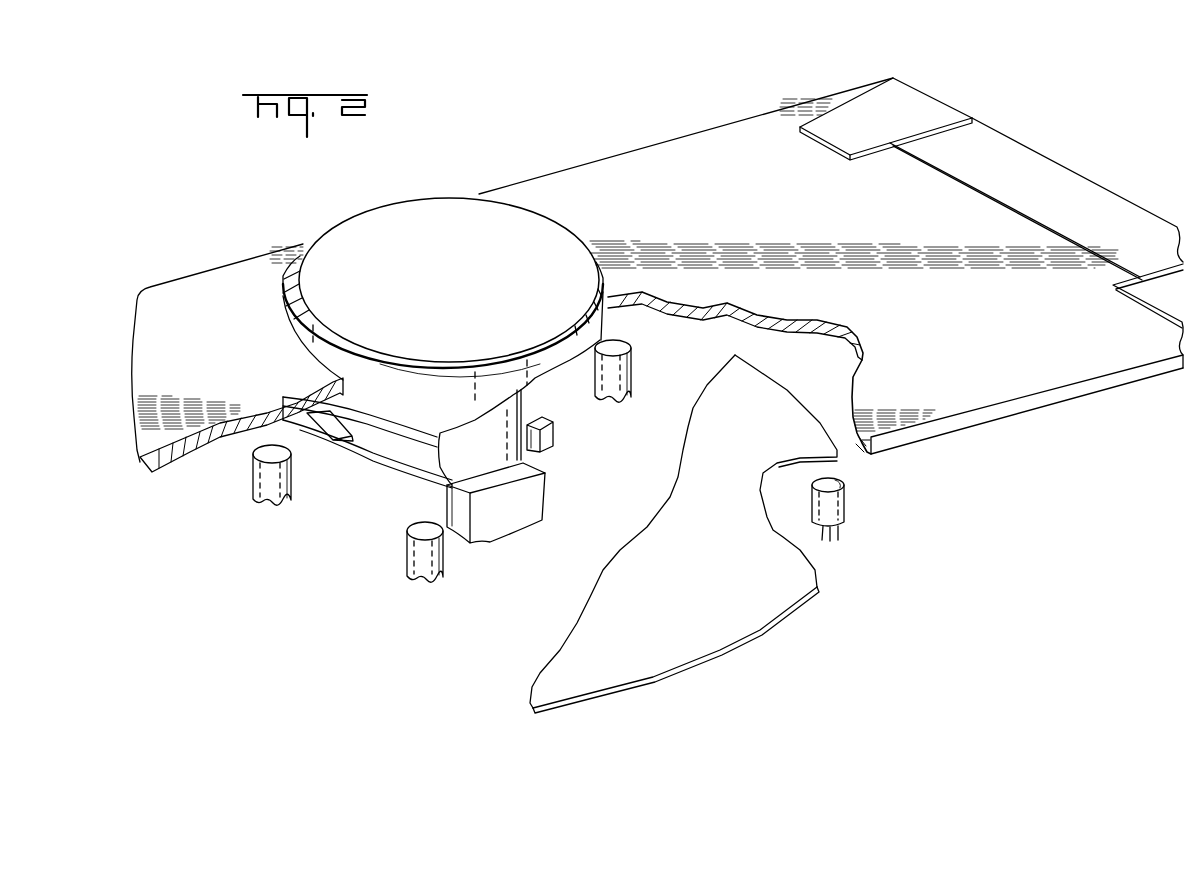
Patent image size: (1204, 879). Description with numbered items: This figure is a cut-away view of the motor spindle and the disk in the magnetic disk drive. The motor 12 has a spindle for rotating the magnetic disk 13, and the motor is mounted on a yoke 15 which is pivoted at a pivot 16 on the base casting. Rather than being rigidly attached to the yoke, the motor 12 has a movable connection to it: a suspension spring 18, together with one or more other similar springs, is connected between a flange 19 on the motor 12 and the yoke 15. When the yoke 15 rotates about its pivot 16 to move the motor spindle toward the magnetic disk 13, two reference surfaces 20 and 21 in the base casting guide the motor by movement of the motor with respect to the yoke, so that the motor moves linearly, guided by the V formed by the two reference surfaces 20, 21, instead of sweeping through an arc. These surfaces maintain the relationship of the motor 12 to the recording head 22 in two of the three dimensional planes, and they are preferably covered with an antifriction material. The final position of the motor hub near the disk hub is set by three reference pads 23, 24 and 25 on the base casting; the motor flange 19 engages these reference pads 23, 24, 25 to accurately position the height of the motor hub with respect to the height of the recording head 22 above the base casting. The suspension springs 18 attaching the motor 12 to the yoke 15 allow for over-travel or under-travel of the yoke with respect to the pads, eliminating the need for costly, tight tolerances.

The motor 12 is at (447, 197).
The magnetic disk 13 is at (757, 629).
The yoke 15 is at (1025, 394).
The pivot 16 is at (893, 78).
The suspension spring 18 is at (326, 427).
The flange 19 is at (389, 452).
The reference surface 20 is at (531, 424).
The reference surface 21 is at (445, 488).
The recording head 22 is at (845, 490).
The reference pad 23 is at (258, 473).
The reference pad 24 is at (443, 566).
The reference pad 25 is at (632, 367).